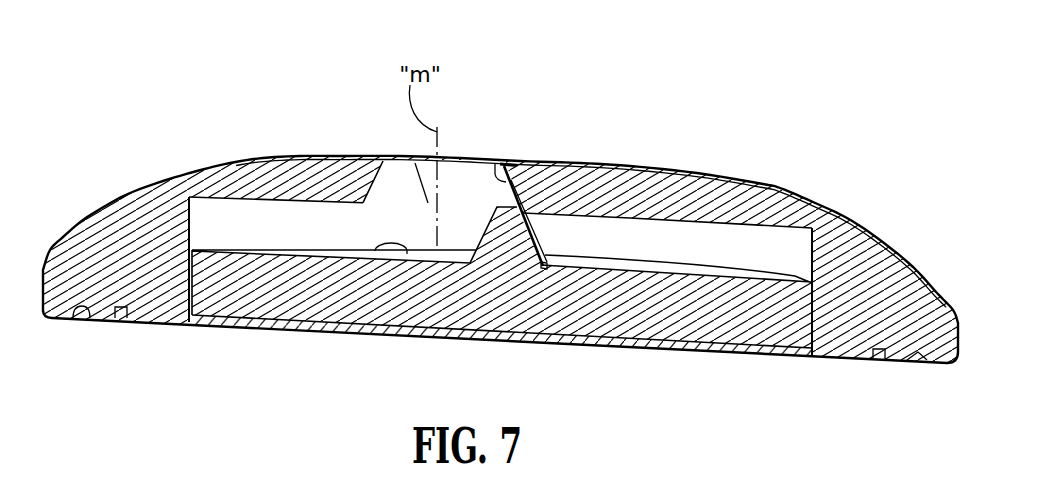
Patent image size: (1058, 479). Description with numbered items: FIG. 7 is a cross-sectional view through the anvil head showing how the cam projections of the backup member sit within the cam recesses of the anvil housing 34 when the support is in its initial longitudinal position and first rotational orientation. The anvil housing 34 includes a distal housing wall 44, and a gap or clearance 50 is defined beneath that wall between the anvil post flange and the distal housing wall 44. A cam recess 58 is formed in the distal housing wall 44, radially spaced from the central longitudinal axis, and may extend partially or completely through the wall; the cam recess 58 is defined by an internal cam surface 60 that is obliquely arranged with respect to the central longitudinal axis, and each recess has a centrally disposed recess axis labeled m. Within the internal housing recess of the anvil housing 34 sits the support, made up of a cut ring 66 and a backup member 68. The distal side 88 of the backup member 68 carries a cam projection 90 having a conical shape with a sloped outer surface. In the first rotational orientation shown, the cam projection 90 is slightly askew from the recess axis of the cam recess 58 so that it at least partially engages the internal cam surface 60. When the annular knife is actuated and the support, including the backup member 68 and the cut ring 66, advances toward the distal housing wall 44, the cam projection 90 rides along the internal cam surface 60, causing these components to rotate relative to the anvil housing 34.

The anvil housing 34 is at (81, 211).
The distal housing wall 44 is at (670, 203).
The gap or clearance 50 is at (212, 227).
The cam recess 58 is at (468, 184).
The internal cam surface 60 is at (497, 162).
The cut ring 66 is at (272, 324).
The backup member 68 is at (760, 323).
The distal side 88 is at (387, 253).
The cam projection 90 is at (532, 248).